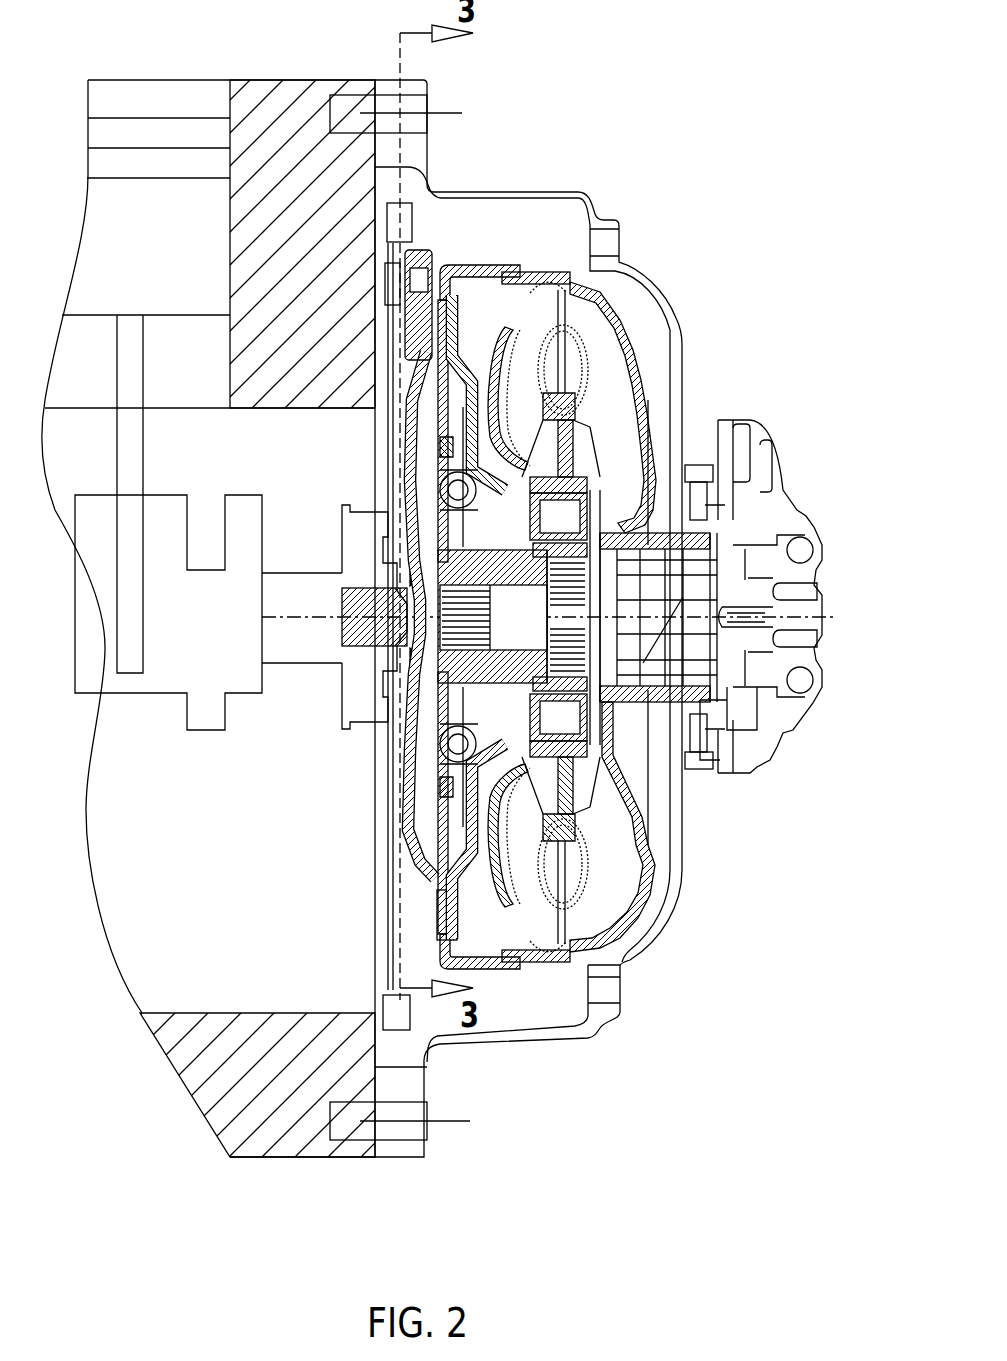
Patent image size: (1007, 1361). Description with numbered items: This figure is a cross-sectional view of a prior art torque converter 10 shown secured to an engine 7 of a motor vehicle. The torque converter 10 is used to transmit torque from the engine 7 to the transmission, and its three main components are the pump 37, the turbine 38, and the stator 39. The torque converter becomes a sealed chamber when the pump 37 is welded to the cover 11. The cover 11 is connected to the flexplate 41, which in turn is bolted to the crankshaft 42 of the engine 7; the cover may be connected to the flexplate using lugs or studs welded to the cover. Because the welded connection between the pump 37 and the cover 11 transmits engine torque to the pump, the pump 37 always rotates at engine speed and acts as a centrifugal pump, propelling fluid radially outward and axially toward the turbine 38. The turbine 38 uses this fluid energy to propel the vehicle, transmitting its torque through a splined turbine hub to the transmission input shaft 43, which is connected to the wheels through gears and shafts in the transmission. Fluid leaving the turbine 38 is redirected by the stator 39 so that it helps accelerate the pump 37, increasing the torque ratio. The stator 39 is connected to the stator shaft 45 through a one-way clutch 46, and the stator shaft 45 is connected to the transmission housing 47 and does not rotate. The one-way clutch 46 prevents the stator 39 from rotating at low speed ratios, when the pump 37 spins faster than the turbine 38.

The engine 7 is at (386, 1050).
The torque converter 10 is at (645, 322).
The cover 11 is at (400, 442).
The pump 37 is at (637, 908).
The turbine 38 is at (492, 911).
The stator 39 is at (532, 804).
The flexplate 41 is at (395, 786).
The crankshaft 42 is at (322, 675).
The transmission input shaft 43 is at (750, 637).
The stator shaft 45 is at (746, 540).
The one-way clutch 46 is at (593, 735).
The transmission housing 47 is at (773, 507).